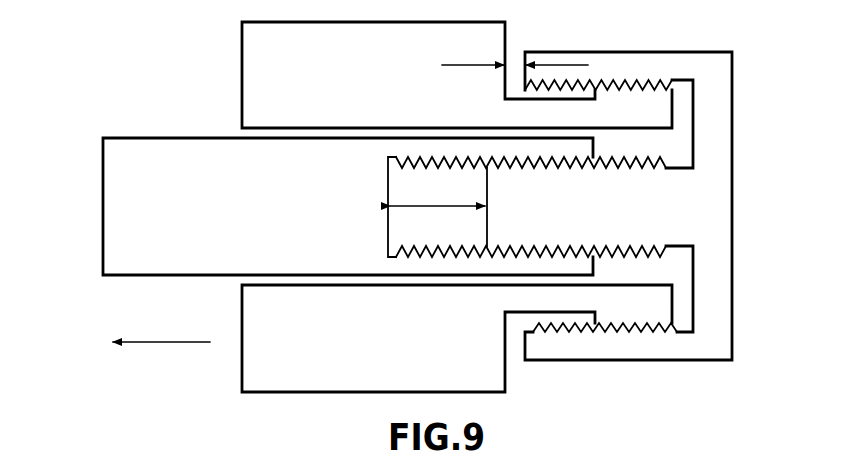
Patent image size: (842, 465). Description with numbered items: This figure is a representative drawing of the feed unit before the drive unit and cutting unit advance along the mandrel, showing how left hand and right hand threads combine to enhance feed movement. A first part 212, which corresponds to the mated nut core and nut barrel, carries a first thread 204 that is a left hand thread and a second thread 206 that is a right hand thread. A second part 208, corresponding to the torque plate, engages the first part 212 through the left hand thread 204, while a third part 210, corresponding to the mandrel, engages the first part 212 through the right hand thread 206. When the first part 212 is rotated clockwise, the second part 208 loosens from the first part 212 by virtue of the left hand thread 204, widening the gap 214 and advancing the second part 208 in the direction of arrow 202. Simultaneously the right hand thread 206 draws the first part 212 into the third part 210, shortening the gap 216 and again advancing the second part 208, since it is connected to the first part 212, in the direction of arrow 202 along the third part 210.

The arrow 202 is at (162, 343).
The first thread 204 is at (625, 80).
The second thread 206 is at (636, 158).
The second part 208 is at (242, 76).
The third part 210 is at (103, 207).
The first part 212 is at (734, 206).
The gap 214 is at (468, 64).
The gap 216 is at (432, 206).